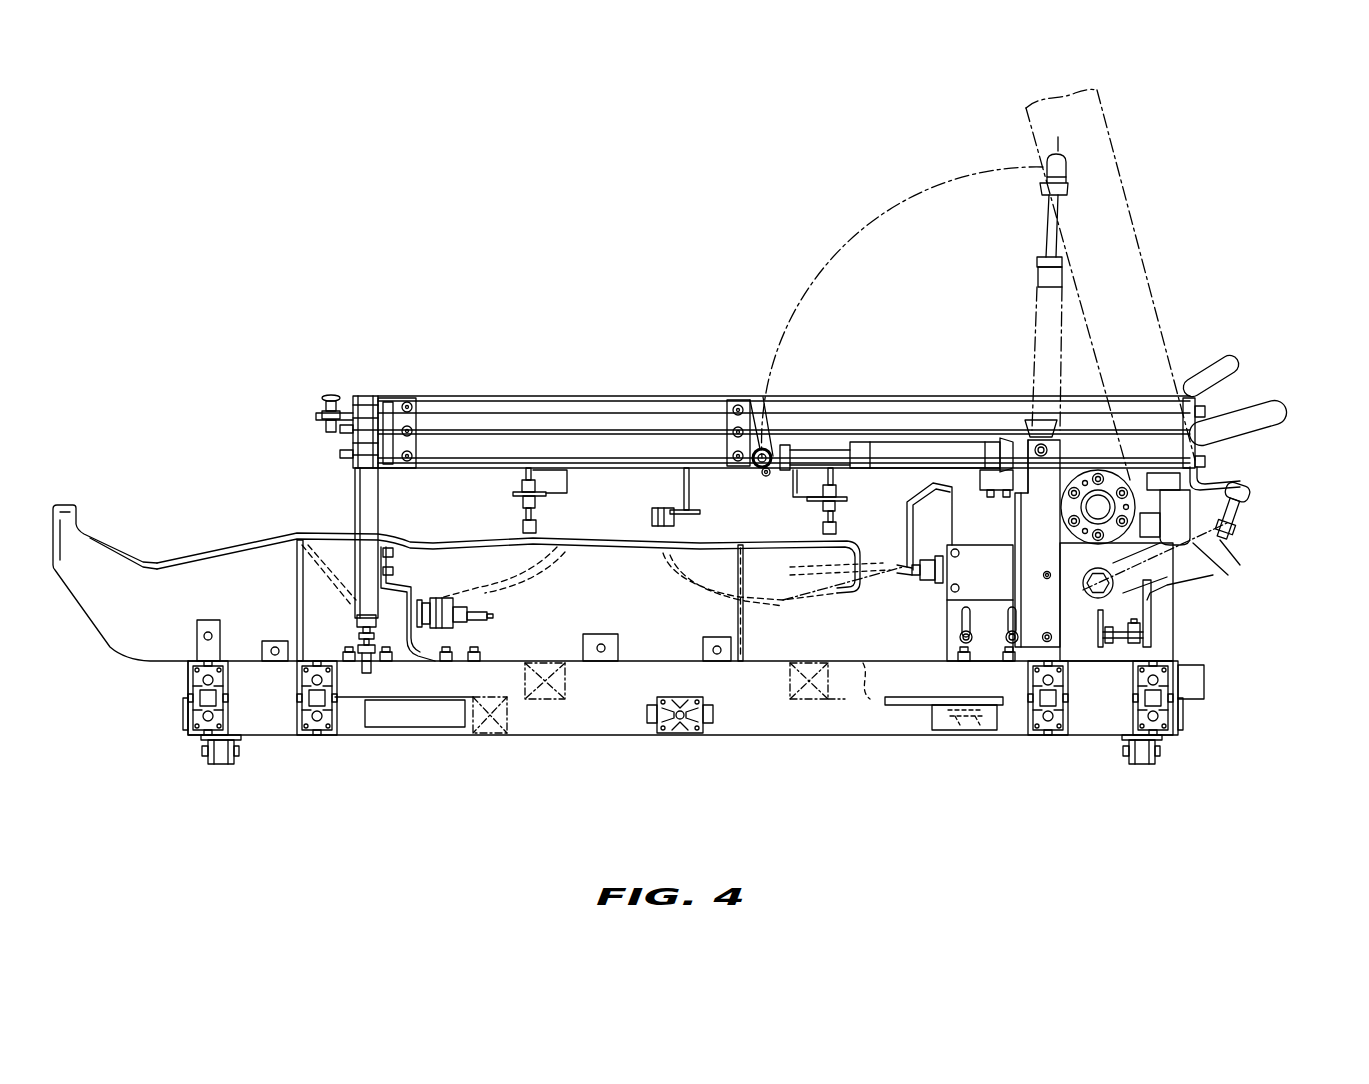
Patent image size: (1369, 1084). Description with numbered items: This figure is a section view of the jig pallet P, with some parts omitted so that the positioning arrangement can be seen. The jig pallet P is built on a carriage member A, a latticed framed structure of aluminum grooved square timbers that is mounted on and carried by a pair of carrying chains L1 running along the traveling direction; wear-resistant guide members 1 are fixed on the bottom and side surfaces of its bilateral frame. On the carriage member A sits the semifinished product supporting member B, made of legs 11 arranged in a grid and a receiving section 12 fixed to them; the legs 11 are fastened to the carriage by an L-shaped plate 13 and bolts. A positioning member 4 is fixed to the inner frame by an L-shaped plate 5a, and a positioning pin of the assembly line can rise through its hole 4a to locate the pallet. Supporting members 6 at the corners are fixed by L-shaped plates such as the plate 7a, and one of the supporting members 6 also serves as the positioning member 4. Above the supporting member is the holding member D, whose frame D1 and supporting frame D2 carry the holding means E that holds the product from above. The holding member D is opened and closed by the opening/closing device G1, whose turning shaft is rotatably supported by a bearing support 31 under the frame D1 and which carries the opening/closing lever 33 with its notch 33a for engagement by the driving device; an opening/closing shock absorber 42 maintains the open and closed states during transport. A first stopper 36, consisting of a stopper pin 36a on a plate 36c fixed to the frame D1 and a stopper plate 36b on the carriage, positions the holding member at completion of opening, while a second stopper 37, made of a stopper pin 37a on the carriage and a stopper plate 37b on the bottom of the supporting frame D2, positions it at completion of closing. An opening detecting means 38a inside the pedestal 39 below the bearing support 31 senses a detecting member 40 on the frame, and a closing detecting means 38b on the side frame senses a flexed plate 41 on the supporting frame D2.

The wear-resistant guide member 1 is at (183, 718).
The positioning member 4 is at (937, 718).
The hole 4a is at (953, 717).
The L-shaped plate 5a is at (898, 704).
The supporting member 6 is at (419, 738).
The L-shaped plate 7a is at (355, 697).
The leg 11 is at (112, 565).
The receiving section 12 is at (228, 545).
The L-shaped plate 13 is at (188, 635).
The bearing support 31 is at (1143, 478).
The opening/closing lever 33 is at (1236, 363).
The notch 33a is at (1255, 398).
The first stopper 36 is at (1272, 505).
The stopper pin 36a is at (1238, 520).
The stopper plate 36b is at (1100, 618).
The plate 36c is at (1238, 492).
The second stopper 37 is at (392, 677).
The stopper pin 37a is at (360, 638).
The stopper plate 37b is at (362, 620).
The opening detecting means 38a is at (1093, 582).
The closing detecting means 38b is at (498, 616).
The pedestal 39 is at (1083, 652).
The detecting member 40 is at (1180, 535).
The flexed plate 41 is at (435, 650).
The opening/closing shock absorber 42 is at (920, 450).
The carriage member A is at (1206, 707).
The semifinished product supporting member B is at (174, 532).
The holding member D is at (528, 392).
The frame D1 is at (645, 404).
The supporting frame D2 is at (365, 502).
The holding means E is at (504, 502).
The opening/closing device G1 is at (1188, 344).
The carrying chain L1 is at (193, 776).
The jig pallet P is at (629, 284).